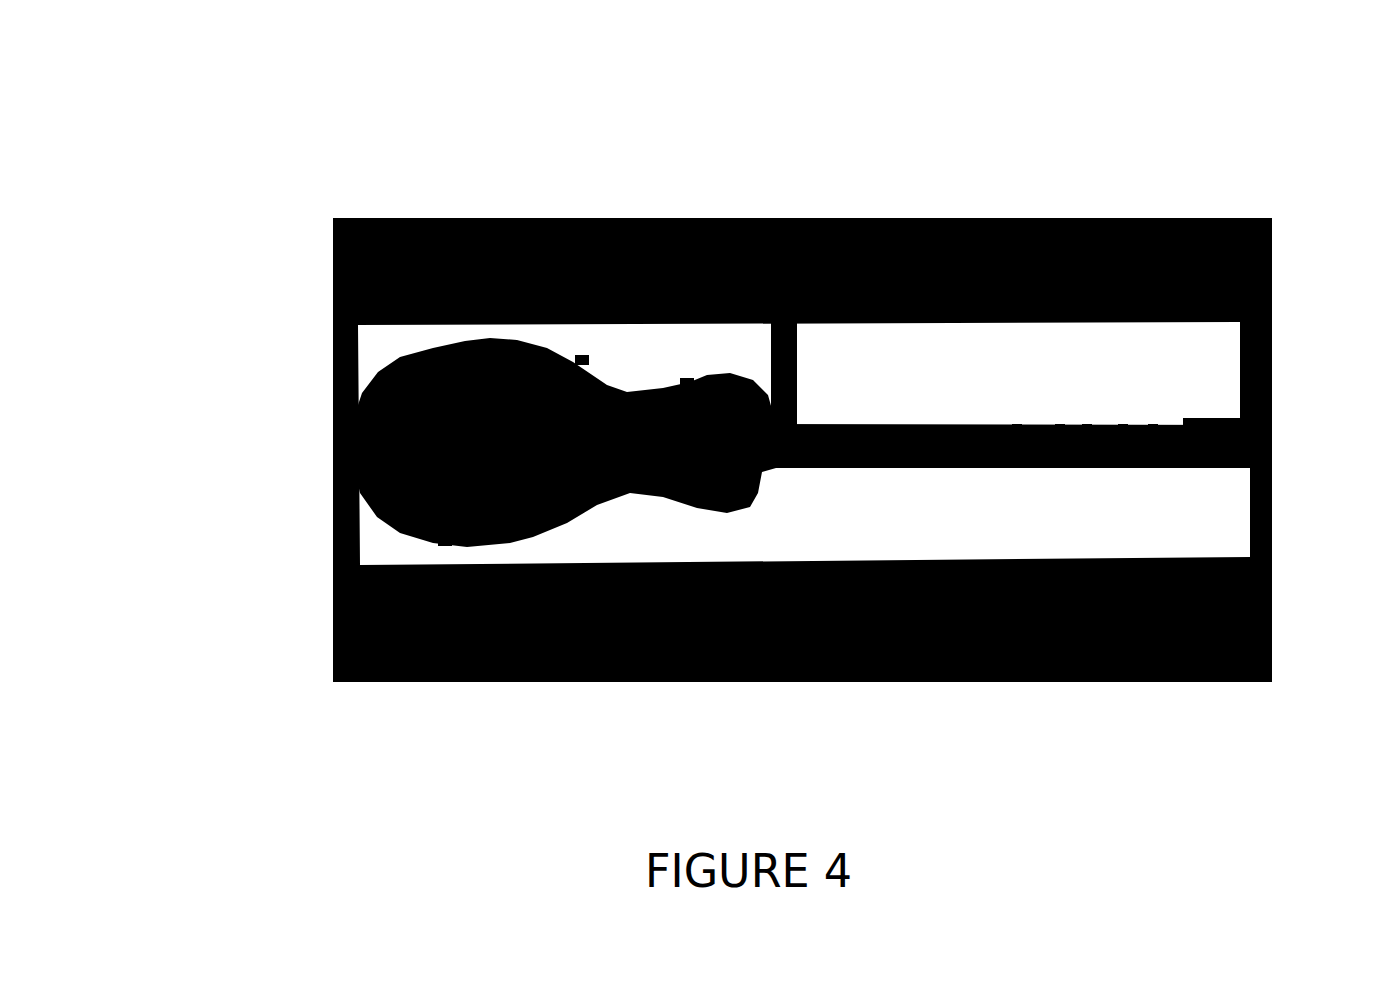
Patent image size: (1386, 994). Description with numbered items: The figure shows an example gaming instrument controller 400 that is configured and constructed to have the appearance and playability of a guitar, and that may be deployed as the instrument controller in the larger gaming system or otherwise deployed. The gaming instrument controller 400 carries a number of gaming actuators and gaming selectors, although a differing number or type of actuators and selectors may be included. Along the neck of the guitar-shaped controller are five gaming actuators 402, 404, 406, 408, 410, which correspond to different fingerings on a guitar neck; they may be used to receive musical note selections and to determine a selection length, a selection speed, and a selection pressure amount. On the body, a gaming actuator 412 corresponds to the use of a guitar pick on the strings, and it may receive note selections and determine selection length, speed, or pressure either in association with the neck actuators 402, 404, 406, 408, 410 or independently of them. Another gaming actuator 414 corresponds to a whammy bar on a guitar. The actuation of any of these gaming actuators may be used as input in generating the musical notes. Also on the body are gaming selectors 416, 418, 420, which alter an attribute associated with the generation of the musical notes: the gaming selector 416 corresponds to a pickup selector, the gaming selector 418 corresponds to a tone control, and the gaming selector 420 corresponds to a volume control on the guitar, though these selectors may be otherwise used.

The gaming instrument controller 400 is at (228, 88).
The gaming actuator 402 is at (1017, 427).
The gaming actuator 404 is at (1060, 427).
The gaming actuator 406 is at (1087, 427).
The gaming actuator 408 is at (1123, 427).
The gaming actuator 410 is at (1153, 427).
The gaming actuator 412 is at (582, 358).
The gaming actuator 414 is at (445, 540).
The gaming selector 416 is at (687, 380).
The gaming selector 418 is at (333, 392).
The gaming selector 420 is at (333, 440).